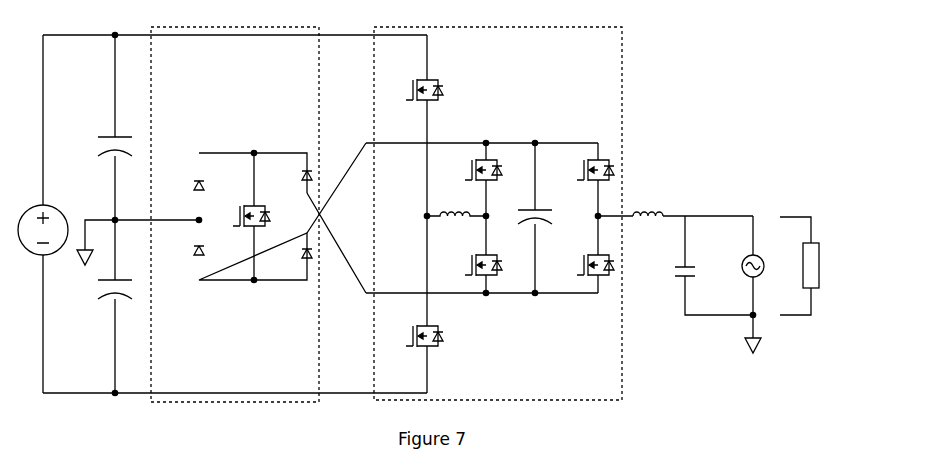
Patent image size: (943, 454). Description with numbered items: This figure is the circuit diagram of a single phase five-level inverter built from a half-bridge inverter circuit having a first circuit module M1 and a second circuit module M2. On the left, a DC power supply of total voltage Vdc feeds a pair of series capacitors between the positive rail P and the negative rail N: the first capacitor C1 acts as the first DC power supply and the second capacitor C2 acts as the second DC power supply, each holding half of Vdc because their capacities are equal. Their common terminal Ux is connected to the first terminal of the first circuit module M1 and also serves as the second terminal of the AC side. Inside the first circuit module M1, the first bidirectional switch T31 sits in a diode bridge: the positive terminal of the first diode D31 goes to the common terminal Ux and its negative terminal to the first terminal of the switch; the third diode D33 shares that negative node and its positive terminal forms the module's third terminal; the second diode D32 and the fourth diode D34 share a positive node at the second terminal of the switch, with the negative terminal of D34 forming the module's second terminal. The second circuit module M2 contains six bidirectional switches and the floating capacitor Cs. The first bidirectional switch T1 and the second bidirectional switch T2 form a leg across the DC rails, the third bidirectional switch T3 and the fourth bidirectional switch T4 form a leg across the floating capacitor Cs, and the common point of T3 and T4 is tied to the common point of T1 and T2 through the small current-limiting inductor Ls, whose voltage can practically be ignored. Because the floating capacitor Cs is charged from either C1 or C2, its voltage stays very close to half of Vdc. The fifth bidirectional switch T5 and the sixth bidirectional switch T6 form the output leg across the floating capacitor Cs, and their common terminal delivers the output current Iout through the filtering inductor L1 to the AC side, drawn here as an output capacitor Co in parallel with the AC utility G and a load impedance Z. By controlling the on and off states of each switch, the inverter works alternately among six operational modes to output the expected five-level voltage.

The positive DC rail node P is at (106, 49).
The negative DC rail node N is at (105, 382).
The first capacitor C1 is at (101, 146).
The second capacitor C2 is at (101, 294).
The DC power supply voltage Vdc is at (48, 217).
The common terminal of the first capacitor and the second capacitor Ux is at (139, 241).
The first diode D31 is at (180, 190).
The second diode D32 is at (180, 254).
The third diode D33 is at (287, 178).
The fourth diode D34 is at (287, 256).
The first bidirectional switch T31 is at (240, 217).
The first circuit module M1 is at (328, 97).
The second circuit module M2 is at (630, 134).
The first bidirectional switch T1 is at (410, 90).
The second bidirectional switch T2 is at (410, 336).
The third bidirectional switch T3 is at (471, 163).
The fourth bidirectional switch T4 is at (471, 272).
The fifth bidirectional switch T5 is at (582, 170).
The sixth bidirectional switch T6 is at (582, 265).
The current-limiting inductor Ls is at (457, 229).
The floating capacitor Cs is at (523, 218).
The output current node Iout is at (580, 221).
The filtering inductor L1 is at (648, 230).
The output filter capacitor Co is at (673, 271).
The grid / AC source G is at (740, 304).
The load impedance Z is at (809, 266).